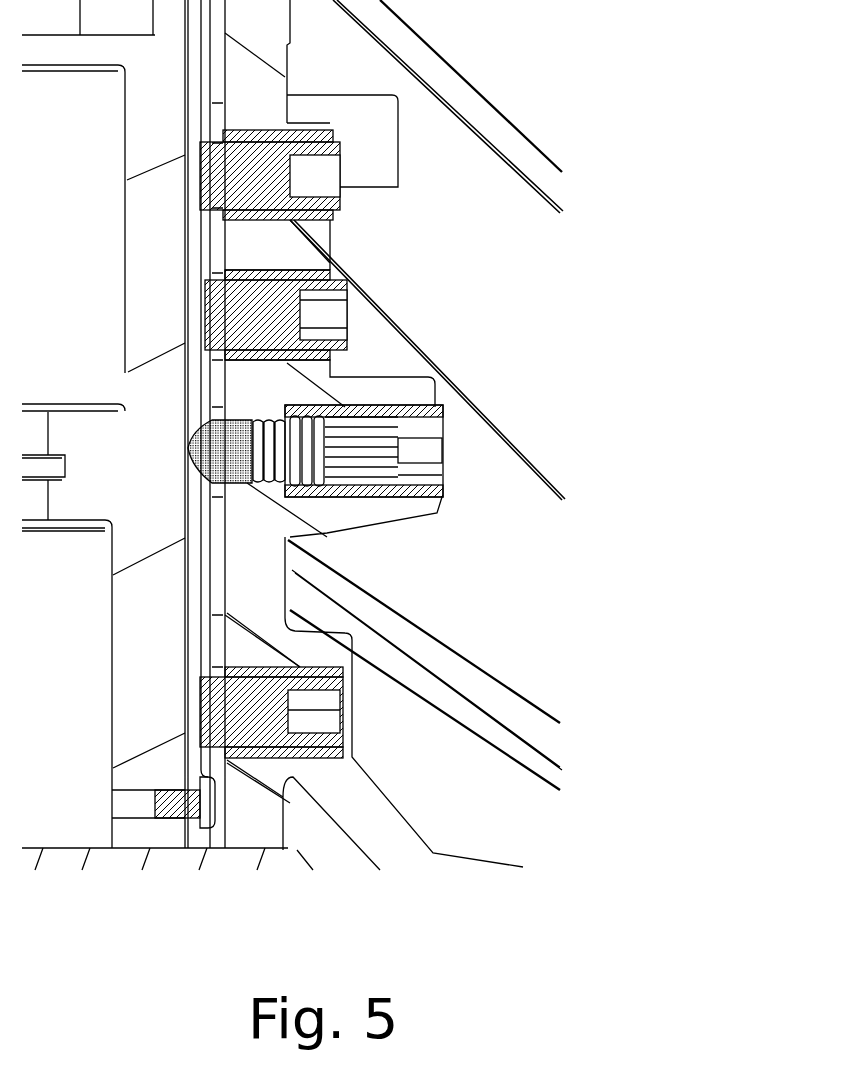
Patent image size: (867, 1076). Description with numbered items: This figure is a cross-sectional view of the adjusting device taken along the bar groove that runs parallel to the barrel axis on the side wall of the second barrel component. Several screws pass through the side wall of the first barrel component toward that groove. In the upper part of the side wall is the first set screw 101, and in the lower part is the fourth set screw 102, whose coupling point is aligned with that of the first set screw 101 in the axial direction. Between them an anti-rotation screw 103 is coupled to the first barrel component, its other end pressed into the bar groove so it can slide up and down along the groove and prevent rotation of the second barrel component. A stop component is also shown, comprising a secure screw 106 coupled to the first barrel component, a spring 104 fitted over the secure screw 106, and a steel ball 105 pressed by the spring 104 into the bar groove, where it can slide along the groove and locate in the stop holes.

The first set screw 101 is at (312, 180).
The fourth set screw 102 is at (310, 722).
The anti-rotation screw 103 is at (323, 320).
The spring 104 is at (285, 442).
The steel ball 105 is at (190, 450).
The secure screw 106 is at (405, 450).